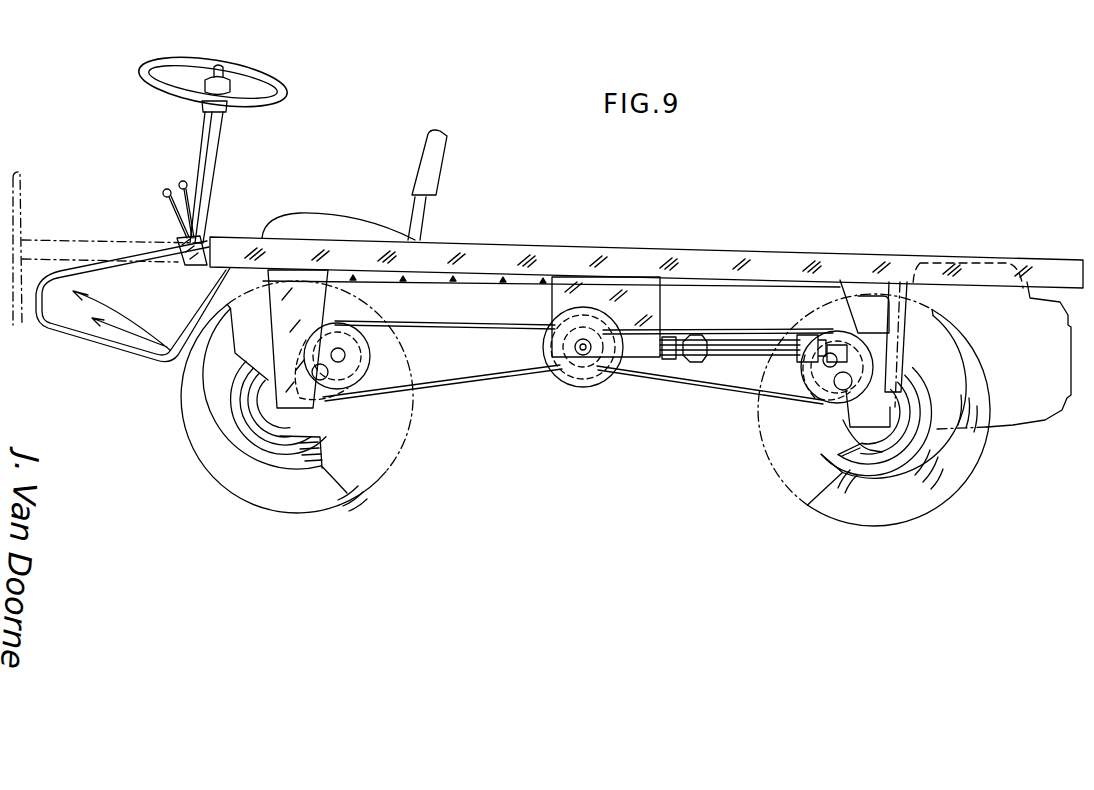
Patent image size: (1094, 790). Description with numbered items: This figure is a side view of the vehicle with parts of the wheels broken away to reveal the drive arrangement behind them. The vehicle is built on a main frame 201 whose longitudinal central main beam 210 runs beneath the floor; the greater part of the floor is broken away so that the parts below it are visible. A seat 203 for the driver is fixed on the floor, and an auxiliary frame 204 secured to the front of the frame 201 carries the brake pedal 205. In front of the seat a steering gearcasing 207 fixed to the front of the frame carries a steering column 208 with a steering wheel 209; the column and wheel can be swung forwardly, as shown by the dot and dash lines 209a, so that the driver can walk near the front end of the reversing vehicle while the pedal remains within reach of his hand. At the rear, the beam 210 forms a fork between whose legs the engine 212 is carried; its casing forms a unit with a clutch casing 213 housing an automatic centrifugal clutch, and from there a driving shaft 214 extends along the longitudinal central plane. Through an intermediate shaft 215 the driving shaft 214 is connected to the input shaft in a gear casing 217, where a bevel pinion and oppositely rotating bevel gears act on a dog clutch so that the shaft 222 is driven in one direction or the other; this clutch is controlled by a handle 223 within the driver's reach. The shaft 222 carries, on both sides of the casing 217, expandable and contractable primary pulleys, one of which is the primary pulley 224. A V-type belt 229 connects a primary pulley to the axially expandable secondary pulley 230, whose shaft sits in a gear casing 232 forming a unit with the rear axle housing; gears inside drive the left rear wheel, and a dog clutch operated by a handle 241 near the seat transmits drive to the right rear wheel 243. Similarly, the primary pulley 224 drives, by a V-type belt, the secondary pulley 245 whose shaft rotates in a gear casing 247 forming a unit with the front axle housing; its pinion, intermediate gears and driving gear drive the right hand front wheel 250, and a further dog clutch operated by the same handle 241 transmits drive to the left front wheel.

The main frame 201 is at (667, 259).
The seat 203 is at (342, 229).
The auxiliary frame 204 is at (40, 330).
The brake pedal 205 is at (103, 300).
The steering gearcasing 207 is at (190, 264).
The steering column 208 is at (214, 128).
The steering wheel 209 is at (291, 91).
The dot and dash lines 209a is at (22, 203).
The longitudinal central main beam 210 is at (498, 281).
The engine 212 is at (1005, 326).
The clutch casing 213 is at (889, 318).
The driving shaft 214 is at (823, 347).
The intermediate shaft 215 is at (740, 350).
The gear casing 217 is at (553, 367).
The shaft 222 is at (583, 351).
The handle 223 is at (183, 180).
The primary pulley 224 is at (477, 378).
The belt 229 is at (688, 383).
The secondary pulley 230 is at (818, 398).
The gear casing 232 is at (840, 424).
The handle 241 is at (163, 191).
The right rear wheel 243 is at (957, 463).
The secondary pulley 245 is at (363, 350).
The gear casing 247 is at (320, 403).
The right hand front wheel 250 is at (200, 440).